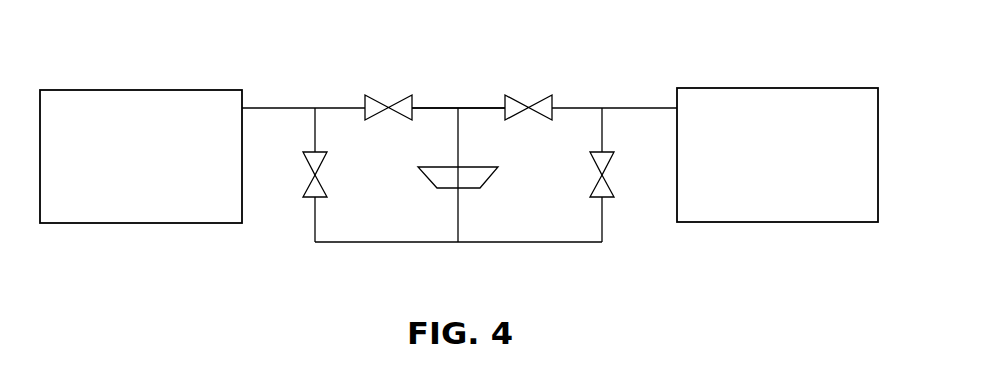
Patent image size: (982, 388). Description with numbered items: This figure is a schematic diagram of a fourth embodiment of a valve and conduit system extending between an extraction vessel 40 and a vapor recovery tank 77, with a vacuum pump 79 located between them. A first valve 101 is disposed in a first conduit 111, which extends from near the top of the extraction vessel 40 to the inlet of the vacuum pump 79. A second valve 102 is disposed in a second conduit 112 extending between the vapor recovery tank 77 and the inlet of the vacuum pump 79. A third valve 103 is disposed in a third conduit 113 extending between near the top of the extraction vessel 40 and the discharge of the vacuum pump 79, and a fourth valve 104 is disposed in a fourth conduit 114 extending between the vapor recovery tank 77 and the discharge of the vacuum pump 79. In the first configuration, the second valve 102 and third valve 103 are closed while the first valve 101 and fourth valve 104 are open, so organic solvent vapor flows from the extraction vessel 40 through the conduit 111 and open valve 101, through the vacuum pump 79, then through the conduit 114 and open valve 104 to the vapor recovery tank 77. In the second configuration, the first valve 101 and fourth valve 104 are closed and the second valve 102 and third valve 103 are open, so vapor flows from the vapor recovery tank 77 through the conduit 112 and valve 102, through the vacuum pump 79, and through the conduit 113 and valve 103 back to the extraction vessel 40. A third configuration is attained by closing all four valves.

The extraction vessel 40 is at (137, 89).
The vapor recovery tank 77 is at (775, 87).
The vacuum pump 79 is at (428, 181).
The first valve 101 is at (385, 106).
The second valve 102 is at (526, 106).
The third valve 103 is at (303, 197).
The fourth valve 104 is at (612, 197).
The first conduit 111 is at (434, 107).
The second conduit 112 is at (483, 107).
The third conduit 113 is at (382, 243).
The fourth conduit 114 is at (526, 243).